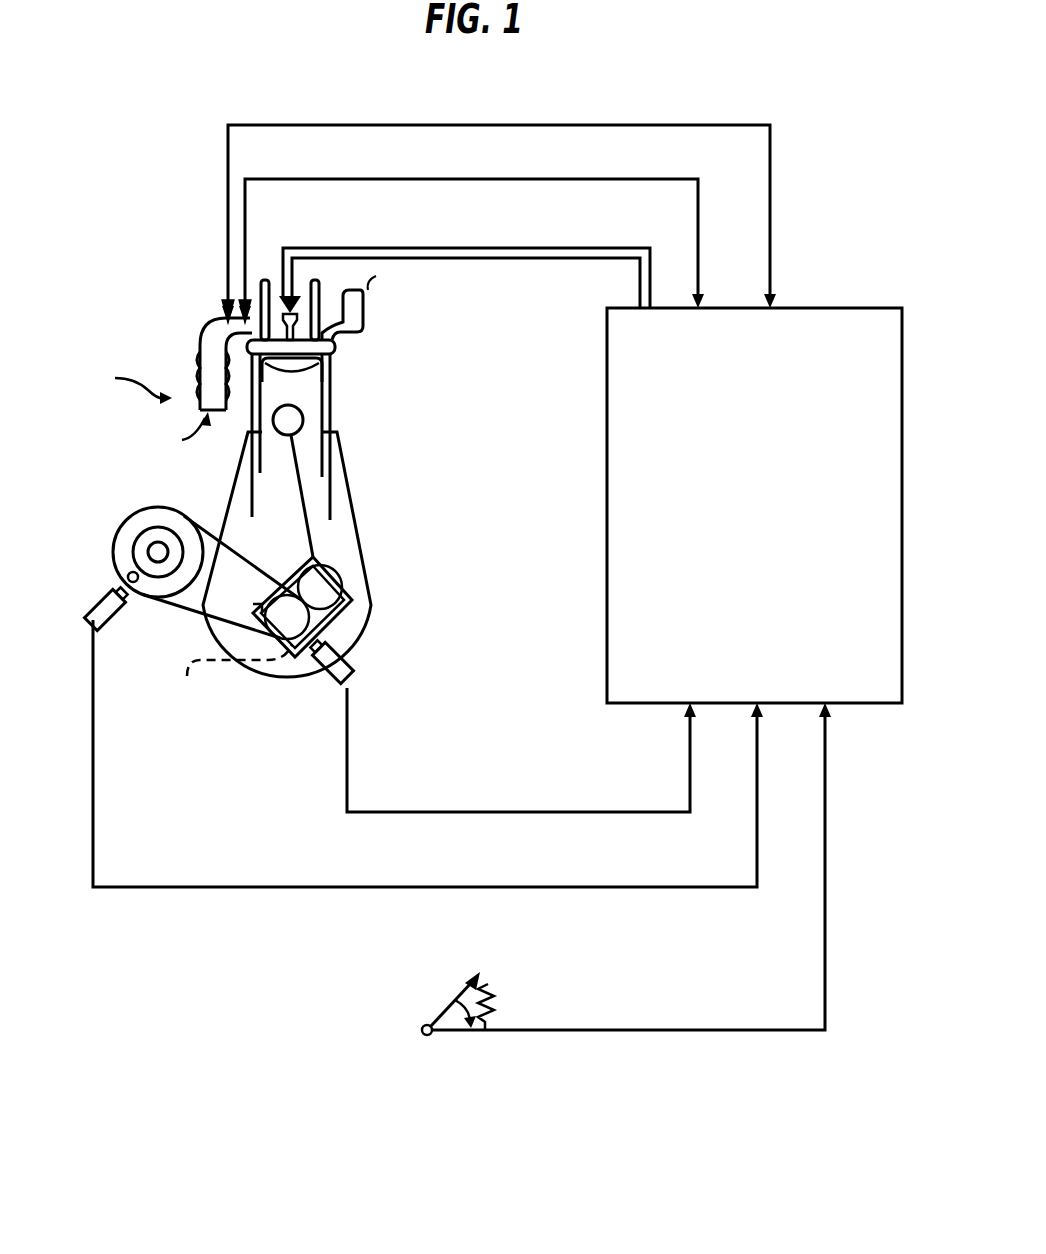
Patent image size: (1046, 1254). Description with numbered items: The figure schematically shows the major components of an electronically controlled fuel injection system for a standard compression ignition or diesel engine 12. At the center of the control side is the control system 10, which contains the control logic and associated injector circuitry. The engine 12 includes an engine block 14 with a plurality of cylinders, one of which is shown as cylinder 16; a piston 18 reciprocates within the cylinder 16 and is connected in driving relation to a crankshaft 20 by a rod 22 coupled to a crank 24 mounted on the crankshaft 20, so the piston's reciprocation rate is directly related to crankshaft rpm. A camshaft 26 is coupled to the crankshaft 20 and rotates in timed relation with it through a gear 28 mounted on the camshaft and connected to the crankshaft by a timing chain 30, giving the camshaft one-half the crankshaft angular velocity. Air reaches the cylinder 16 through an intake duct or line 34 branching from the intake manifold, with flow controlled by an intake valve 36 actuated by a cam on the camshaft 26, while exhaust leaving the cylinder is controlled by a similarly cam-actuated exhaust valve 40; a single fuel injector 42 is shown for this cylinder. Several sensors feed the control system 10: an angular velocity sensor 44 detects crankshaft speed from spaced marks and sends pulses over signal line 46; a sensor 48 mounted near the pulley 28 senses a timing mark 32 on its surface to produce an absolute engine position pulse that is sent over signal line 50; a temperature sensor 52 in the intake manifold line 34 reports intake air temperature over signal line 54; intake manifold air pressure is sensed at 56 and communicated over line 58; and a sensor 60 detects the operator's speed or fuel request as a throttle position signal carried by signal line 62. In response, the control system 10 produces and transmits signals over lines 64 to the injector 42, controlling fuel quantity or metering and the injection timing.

The control system 10 is at (805, 308).
The engine 12 is at (128, 405).
The engine block 14 is at (232, 503).
The cylinder 16 is at (300, 370).
The piston 18 is at (304, 423).
The crankshaft 20 is at (241, 653).
The rod 22 is at (312, 540).
The crank 24 is at (332, 612).
The camshaft 26 is at (148, 542).
The gear 28 is at (120, 550).
The timing chain 30 is at (182, 608).
The timing mark 32 is at (130, 577).
The duct or line 34 is at (200, 350).
The intake valve 36 is at (248, 302).
The exhaust valve 40 is at (366, 318).
The fuel injector 42 is at (335, 346).
The angular velocity sensor 44 is at (338, 648).
The signal line 46 is at (350, 760).
The sensor 48 is at (87, 614).
The signal line 50 is at (93, 796).
The temperature sensor 52 is at (228, 320).
The signal line 54 is at (228, 136).
The intake manifold air pressure sensing point 56 is at (245, 317).
The line 58 is at (245, 196).
The sensor 60 is at (447, 1004).
The signal line 62 is at (825, 888).
The lines 64 is at (545, 260).